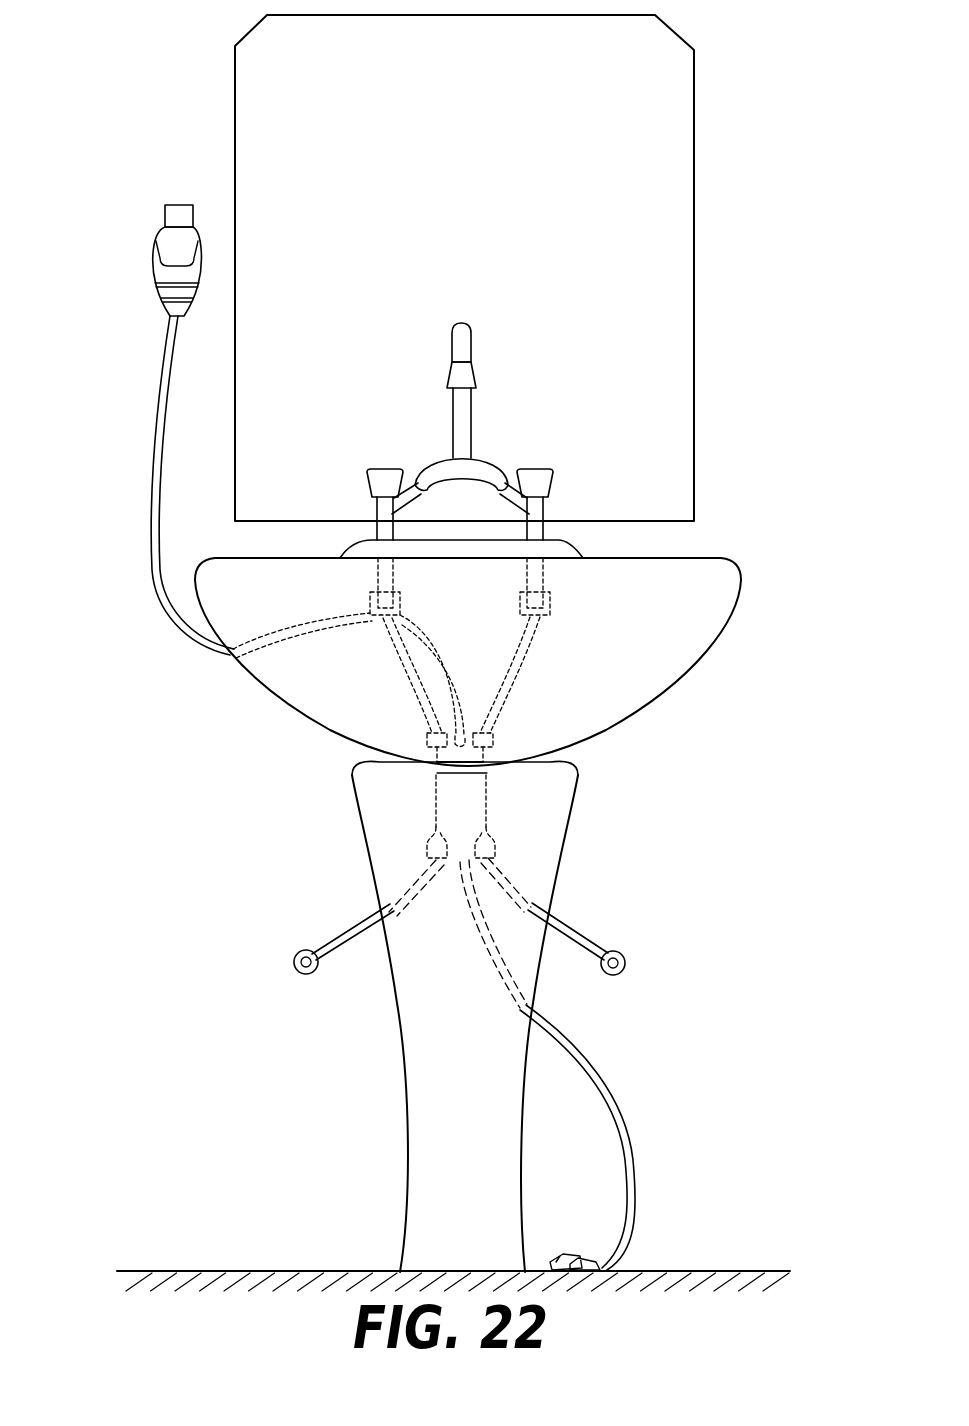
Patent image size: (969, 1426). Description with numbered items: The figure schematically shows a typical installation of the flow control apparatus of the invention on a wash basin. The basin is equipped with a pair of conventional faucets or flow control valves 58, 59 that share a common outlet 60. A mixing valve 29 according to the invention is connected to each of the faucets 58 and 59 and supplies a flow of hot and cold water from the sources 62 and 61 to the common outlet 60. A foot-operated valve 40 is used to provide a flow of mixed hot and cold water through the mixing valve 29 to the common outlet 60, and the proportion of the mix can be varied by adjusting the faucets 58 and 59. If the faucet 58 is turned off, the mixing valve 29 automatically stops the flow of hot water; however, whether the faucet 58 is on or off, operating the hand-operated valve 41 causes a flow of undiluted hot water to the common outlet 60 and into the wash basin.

The hand-operated valve 41 is at (140, 278).
The common outlet 60 is at (476, 370).
The faucet 59 is at (367, 480).
The faucet 58 is at (555, 468).
The mixing valve 29 is at (497, 797).
The hot water source 62 is at (296, 968).
The cold water source 61 is at (625, 963).
The foot-operated valve 40 is at (578, 1237).